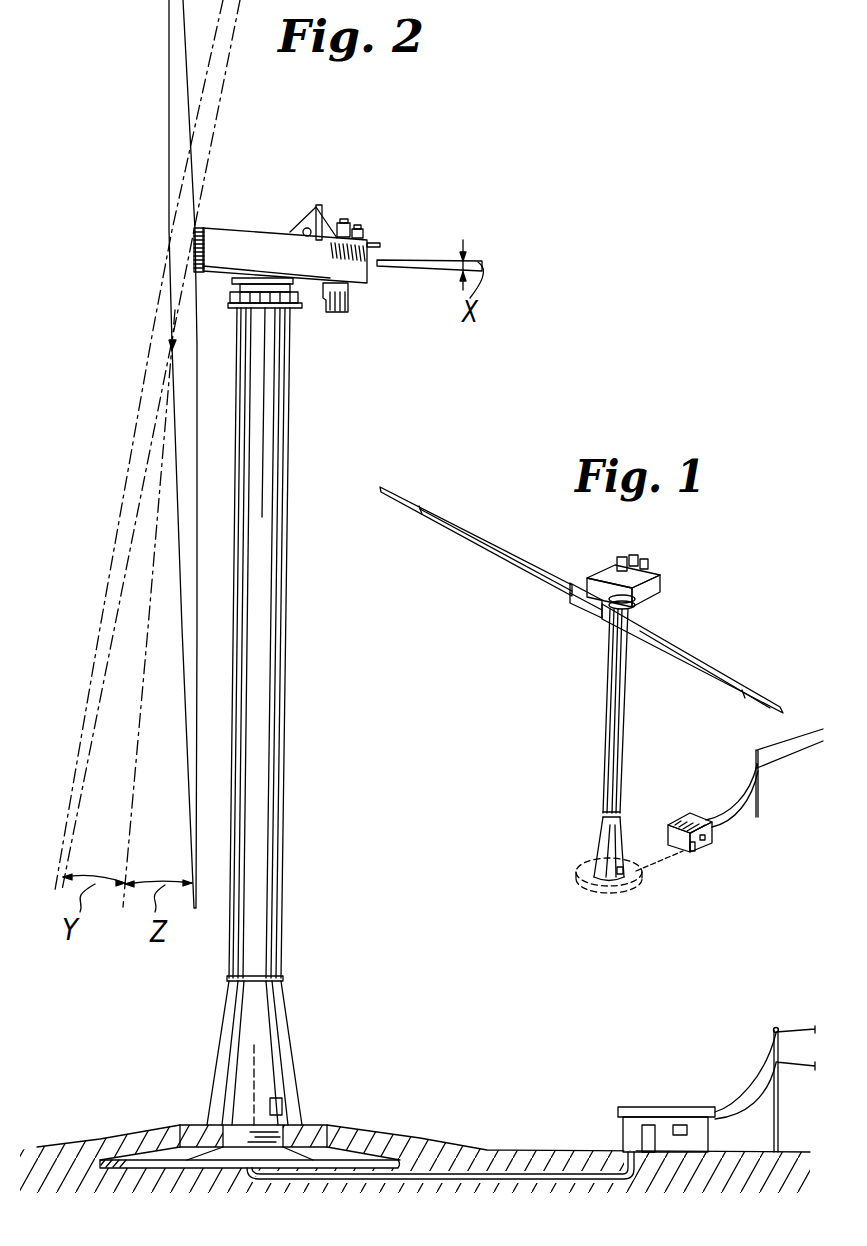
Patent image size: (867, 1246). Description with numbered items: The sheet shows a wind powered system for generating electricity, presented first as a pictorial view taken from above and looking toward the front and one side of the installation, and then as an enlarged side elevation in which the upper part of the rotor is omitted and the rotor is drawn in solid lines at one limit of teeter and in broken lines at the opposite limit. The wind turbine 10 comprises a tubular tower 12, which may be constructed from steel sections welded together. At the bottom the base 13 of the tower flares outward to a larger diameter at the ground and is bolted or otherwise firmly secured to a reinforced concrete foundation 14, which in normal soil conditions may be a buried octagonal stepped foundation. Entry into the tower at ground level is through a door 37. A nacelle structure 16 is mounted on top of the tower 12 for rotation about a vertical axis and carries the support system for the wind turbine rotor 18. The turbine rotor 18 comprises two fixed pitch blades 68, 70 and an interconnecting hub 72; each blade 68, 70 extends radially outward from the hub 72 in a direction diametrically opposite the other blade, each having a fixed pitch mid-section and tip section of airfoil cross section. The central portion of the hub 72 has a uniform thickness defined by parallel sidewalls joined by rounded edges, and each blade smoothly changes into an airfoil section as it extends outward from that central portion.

In FIG. 2, the wind turbine 10 is at (340, 166).
In FIG. 1, the wind turbine 10 is at (560, 694).
In FIG. 2, the tubular tower 12 is at (272, 608).
In FIG. 1, the tubular tower 12 is at (603, 800).
In FIG. 2, the base 13 is at (223, 1075).
In FIG. 1, the base 13 is at (606, 847).
In FIG. 2, the reinforced concrete foundation 14 is at (137, 1153).
In FIG. 1, the reinforced concrete foundation 14 is at (645, 883).
In FIG. 2, the nacelle structure 16 is at (244, 229).
In FIG. 1, the nacelle structure 16 is at (643, 576).
In FIG. 2, the wind turbine rotor 18 is at (166, 80).
In FIG. 1, the wind turbine rotor 18 is at (476, 547).
In FIG. 2, the door 37 is at (282, 1105).
In FIG. 1, the door 37 is at (620, 877).
In FIG. 1, the fixed pitch blade 68 is at (480, 537).
In FIG. 1, the fixed pitch blade 70 is at (663, 638).
In FIG. 2, the hub 72 is at (194, 246).
In FIG. 1, the hub 72 is at (578, 612).